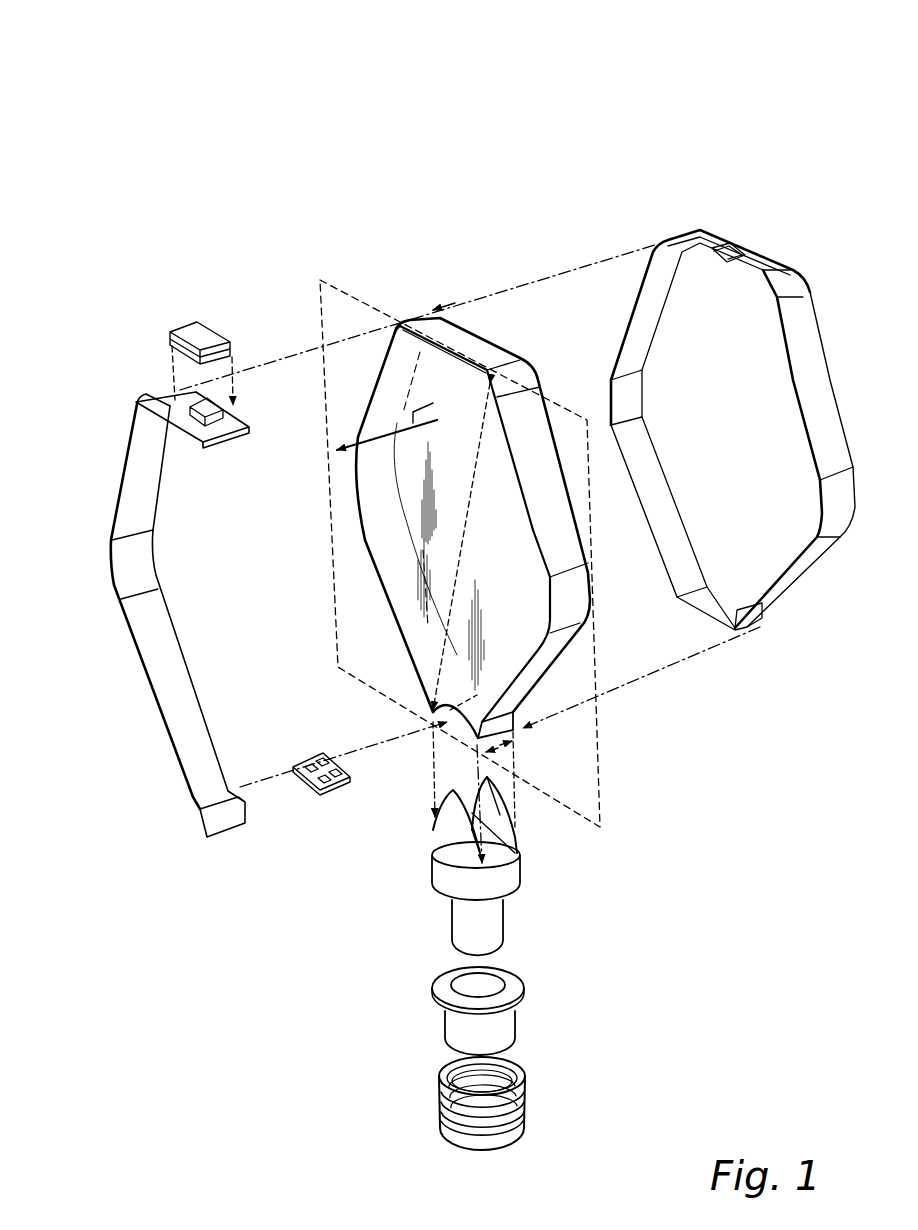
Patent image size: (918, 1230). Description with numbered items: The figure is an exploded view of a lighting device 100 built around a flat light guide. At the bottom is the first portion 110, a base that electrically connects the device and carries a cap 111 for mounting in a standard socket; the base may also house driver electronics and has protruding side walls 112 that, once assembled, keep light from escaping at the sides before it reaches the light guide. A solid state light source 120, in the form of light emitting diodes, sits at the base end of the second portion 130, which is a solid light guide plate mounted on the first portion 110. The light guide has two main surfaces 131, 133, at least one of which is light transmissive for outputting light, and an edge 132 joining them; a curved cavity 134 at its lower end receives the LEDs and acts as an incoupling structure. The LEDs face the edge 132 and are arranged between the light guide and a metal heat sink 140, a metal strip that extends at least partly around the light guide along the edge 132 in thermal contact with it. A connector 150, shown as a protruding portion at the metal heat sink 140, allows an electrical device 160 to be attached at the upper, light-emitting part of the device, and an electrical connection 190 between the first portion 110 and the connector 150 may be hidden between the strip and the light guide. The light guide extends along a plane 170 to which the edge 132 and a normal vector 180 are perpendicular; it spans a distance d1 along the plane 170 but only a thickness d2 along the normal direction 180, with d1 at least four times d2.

The lighting device 100 is at (710, 97).
The first portion 110 is at (518, 964).
The cap 111 is at (447, 1130).
The protruding side walls 112 is at (452, 837).
The solid state light source 120 is at (314, 791).
The second portion 130 is at (501, 521).
The light transmissive portion of the outer surface 131 is at (450, 531).
The edge 132 is at (456, 347).
The main surface 133 is at (565, 465).
The cavity 134 is at (449, 738).
The metal heat sink 140 is at (803, 555).
The connector 150 is at (216, 410).
The electrical device 160 is at (203, 337).
The plane 170 is at (557, 404).
The normal vector 180 is at (380, 443).
The electrical connection 190 is at (148, 672).
The distance along the plane d1 is at (465, 600).
The distance along the normal direction d2 is at (500, 747).